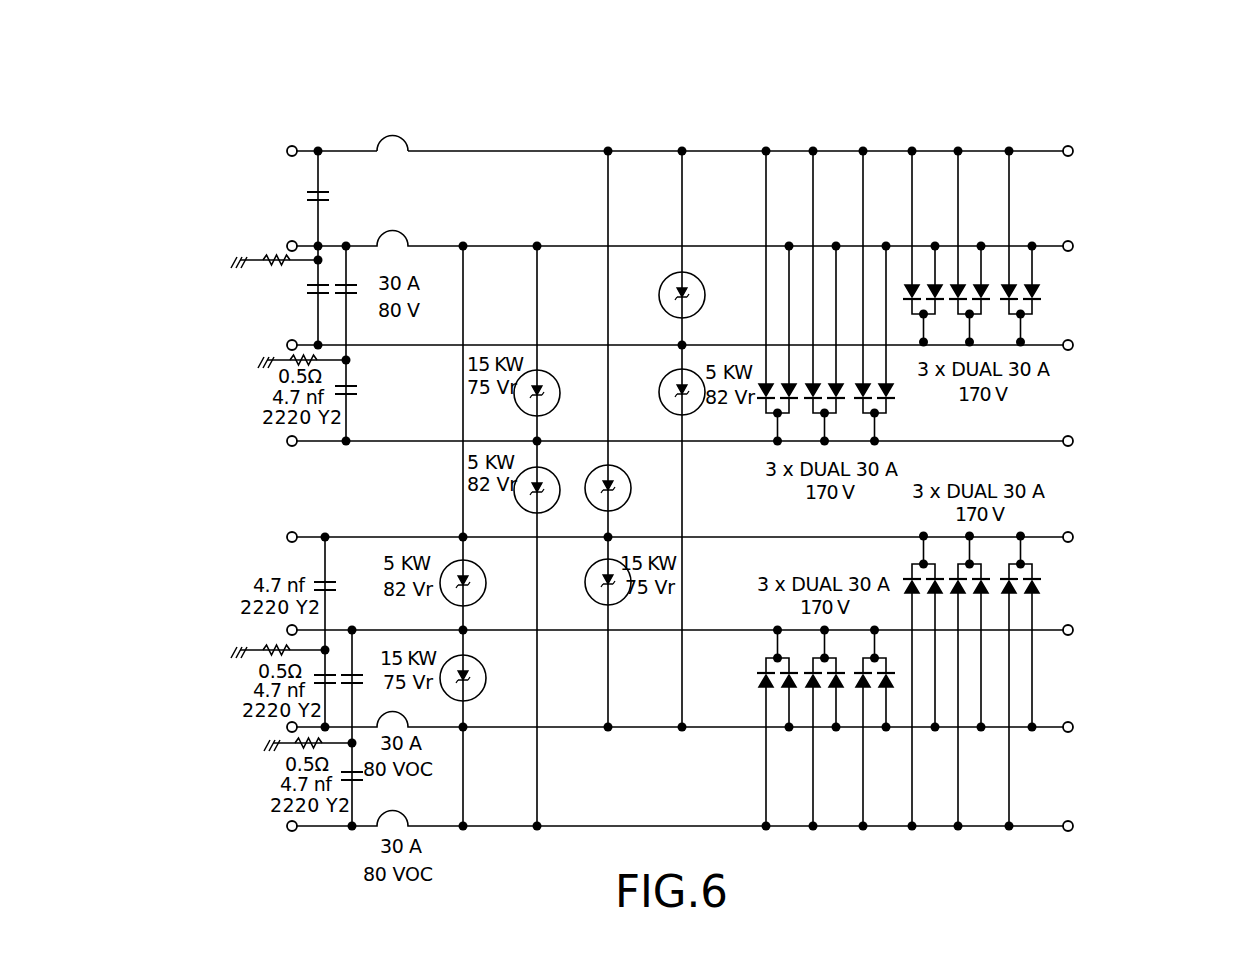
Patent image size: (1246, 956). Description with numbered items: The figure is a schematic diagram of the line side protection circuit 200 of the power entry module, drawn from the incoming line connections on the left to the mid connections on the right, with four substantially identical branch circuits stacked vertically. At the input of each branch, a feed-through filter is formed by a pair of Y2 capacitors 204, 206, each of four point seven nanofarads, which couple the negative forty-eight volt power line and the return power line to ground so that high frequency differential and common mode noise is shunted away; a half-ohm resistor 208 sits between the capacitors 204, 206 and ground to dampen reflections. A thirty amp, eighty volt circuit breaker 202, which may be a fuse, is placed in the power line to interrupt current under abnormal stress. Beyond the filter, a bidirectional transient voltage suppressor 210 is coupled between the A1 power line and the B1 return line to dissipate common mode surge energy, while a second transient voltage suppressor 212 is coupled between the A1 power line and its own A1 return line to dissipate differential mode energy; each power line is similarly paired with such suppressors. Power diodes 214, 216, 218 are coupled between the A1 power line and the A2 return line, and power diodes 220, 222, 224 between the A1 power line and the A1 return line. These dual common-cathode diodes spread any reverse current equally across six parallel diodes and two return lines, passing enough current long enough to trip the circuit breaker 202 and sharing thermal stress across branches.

The line side protection circuit 200 is at (1097, 125).
The circuit breaker 202 is at (377, 134).
The Y2 capacitor 204 is at (312, 181).
The Y2 capacitor 206 is at (236, 314).
The resistor 208 is at (246, 284).
The bidirectional transient voltage suppressor 210 is at (597, 447).
The transient voltage suppressor 212 is at (672, 270).
The power diode 214 is at (760, 370).
The power diode 216 is at (808, 370).
The power diode 218 is at (874, 370).
The power diode 220 is at (920, 277).
The power diode 222 is at (968, 277).
The power diode 224 is at (1017, 277).